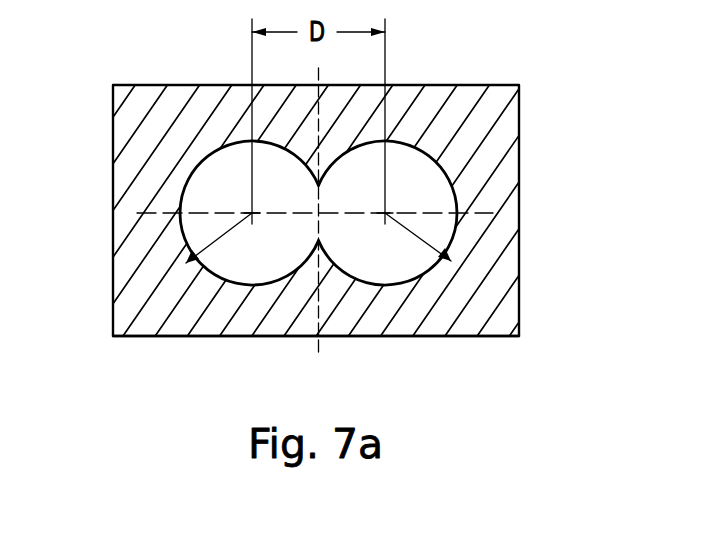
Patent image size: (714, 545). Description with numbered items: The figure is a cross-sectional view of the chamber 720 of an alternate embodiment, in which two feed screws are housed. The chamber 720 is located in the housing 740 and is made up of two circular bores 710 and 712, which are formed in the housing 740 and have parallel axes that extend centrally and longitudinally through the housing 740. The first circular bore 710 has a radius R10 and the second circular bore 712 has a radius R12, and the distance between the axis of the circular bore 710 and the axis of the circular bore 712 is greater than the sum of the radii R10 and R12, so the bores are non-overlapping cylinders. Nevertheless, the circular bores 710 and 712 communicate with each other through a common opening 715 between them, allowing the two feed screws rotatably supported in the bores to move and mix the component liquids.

The chamber 720 is at (185, 132).
The circular bore 710 is at (252, 213).
The circular bore 712 is at (385, 213).
The radius of circular bore R10 is at (186, 263).
The radius of circular bore R12 is at (451, 261).
The housing 740 is at (266, 337).
The common opening 715 is at (318, 212).